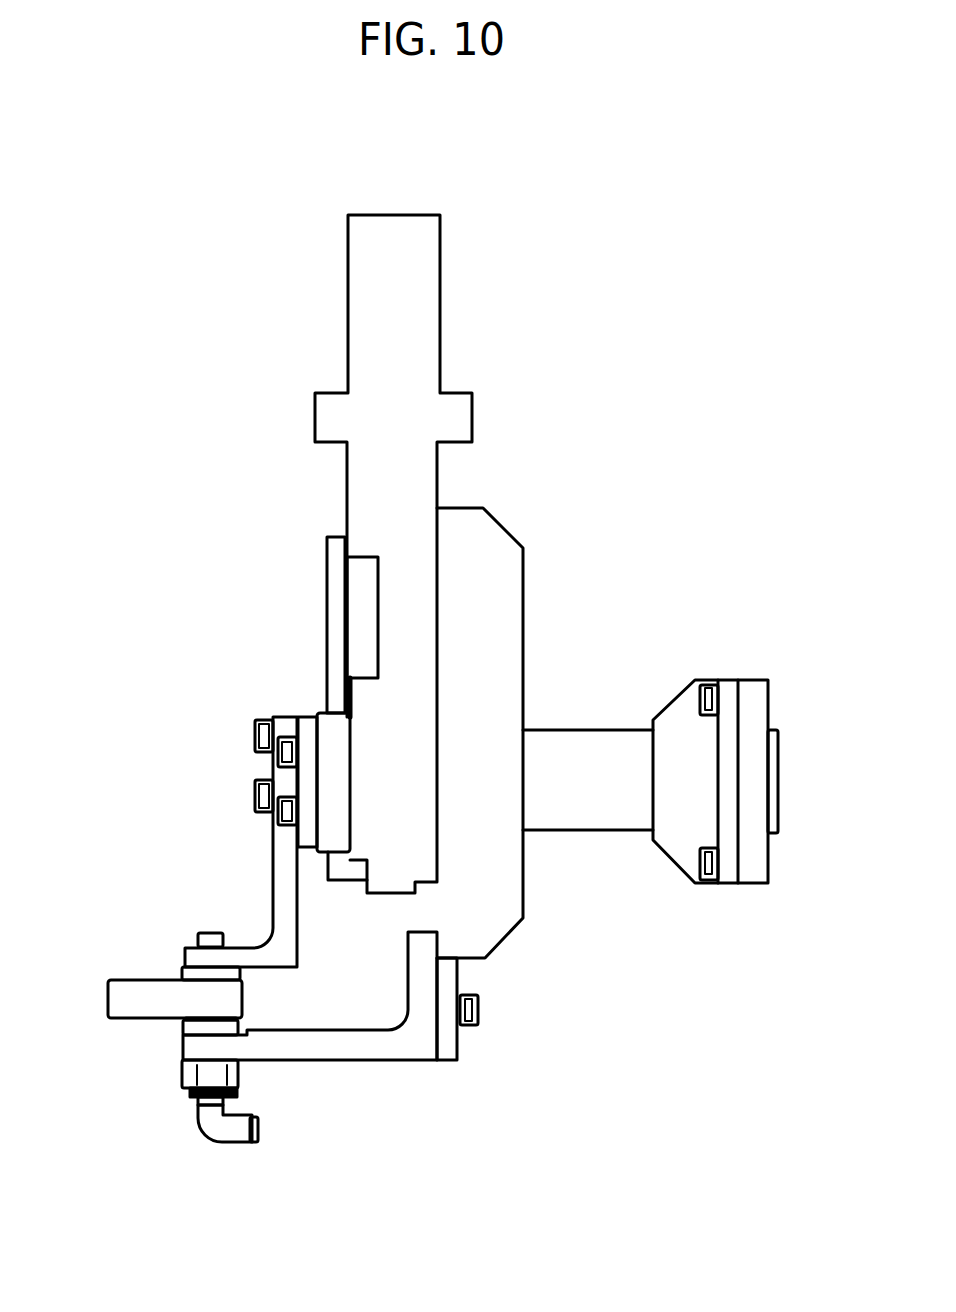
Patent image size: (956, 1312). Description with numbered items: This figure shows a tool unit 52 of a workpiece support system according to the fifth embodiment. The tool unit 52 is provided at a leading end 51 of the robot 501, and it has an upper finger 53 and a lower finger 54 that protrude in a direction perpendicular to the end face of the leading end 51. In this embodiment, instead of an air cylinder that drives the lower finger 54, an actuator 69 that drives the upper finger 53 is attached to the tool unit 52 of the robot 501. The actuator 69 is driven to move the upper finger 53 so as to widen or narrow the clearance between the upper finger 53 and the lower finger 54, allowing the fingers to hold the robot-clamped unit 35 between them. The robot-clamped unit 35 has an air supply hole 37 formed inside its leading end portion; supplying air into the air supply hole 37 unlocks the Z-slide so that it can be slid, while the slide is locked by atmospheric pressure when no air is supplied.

The tool unit 52 is at (591, 238).
The actuator 69 is at (395, 500).
The leading end 51 is at (676, 720).
The robot 501 is at (760, 708).
The upper finger 53 is at (288, 932).
The robot-clamped unit 35 is at (132, 985).
The lower finger 54 is at (355, 1043).
The air supply hole 37 is at (198, 1128).